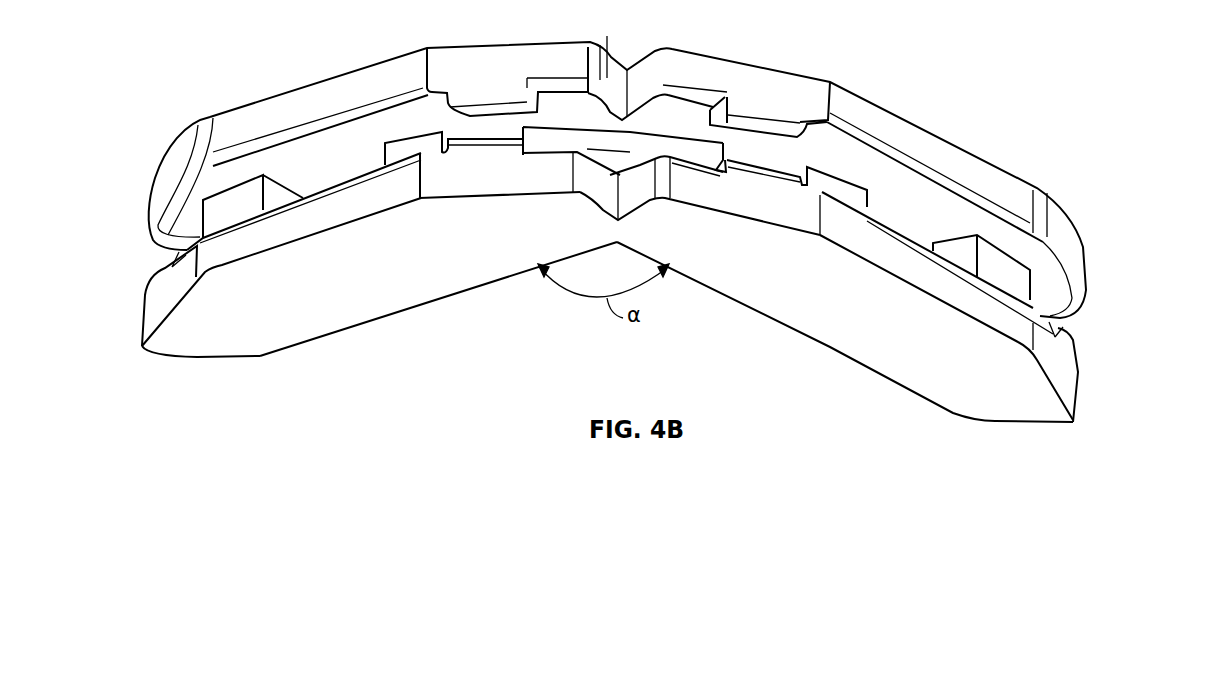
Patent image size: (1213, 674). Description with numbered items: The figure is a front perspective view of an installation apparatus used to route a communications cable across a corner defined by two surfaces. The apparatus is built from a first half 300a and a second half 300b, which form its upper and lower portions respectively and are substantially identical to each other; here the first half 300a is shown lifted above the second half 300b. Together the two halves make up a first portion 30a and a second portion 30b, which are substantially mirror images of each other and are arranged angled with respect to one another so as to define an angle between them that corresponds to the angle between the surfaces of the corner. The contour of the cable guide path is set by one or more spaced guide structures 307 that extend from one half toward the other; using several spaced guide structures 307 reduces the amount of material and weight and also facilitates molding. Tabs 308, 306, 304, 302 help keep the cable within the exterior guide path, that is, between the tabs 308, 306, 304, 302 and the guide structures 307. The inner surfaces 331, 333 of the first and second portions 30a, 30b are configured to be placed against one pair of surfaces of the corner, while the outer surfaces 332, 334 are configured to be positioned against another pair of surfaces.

The first half 300a is at (1092, 279).
The second half 300b is at (1087, 407).
The tab 302 is at (163, 275).
The tab 304 is at (368, 67).
The tab 306 is at (750, 63).
The guide structure 307 is at (217, 212).
The tab 308 is at (1065, 352).
The inner surface 331 is at (783, 303).
The outer surface 332 is at (943, 150).
The inner surface 333 is at (418, 282).
The outer surface 334 is at (243, 125).
The first portion 30a is at (852, 372).
The second portion 30b is at (310, 347).